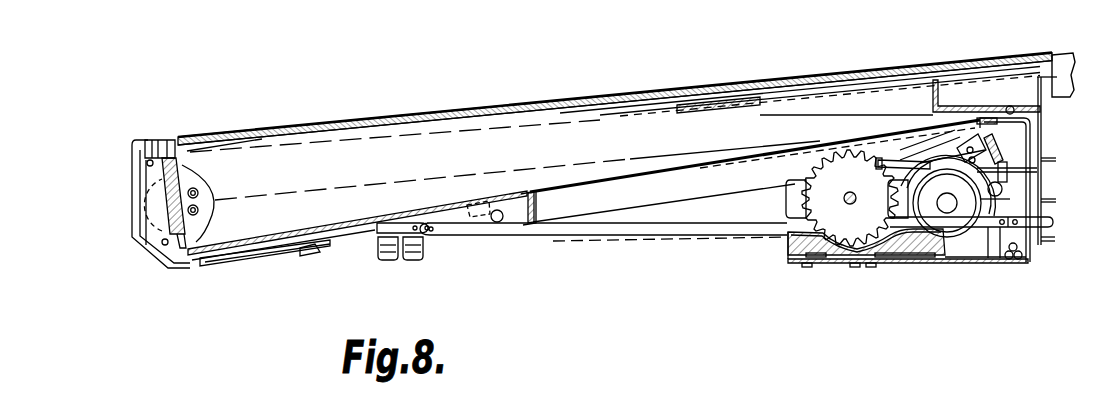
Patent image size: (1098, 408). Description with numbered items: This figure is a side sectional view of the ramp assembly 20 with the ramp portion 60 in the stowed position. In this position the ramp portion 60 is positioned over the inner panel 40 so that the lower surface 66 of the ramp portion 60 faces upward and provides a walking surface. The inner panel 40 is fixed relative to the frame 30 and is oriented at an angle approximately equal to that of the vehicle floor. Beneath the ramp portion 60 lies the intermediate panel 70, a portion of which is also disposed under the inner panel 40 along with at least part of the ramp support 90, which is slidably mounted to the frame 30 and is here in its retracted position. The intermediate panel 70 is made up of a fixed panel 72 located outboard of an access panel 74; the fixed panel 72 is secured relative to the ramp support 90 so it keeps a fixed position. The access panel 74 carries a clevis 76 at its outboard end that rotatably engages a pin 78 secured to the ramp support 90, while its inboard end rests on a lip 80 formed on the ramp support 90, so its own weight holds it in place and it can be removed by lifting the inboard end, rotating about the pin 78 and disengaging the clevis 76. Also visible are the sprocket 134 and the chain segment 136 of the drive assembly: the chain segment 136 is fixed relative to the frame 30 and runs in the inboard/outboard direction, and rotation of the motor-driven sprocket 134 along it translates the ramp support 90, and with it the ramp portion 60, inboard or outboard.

The ramp assembly 20 is at (120, 275).
The frame 30 is at (1040, 187).
The inner panel 40 is at (830, 93).
The ramp portion 60 is at (490, 100).
The lower surface 66 is at (759, 79).
The intermediate panel 70 is at (529, 185).
The fixed panel 72 is at (382, 213).
The access panel 74 is at (658, 170).
The clevis 76 is at (533, 222).
The pin 78 is at (493, 218).
The lip 80 is at (978, 124).
The ramp support 90 is at (890, 271).
The sprocket 134 is at (813, 220).
The chain segment 136 is at (650, 226).